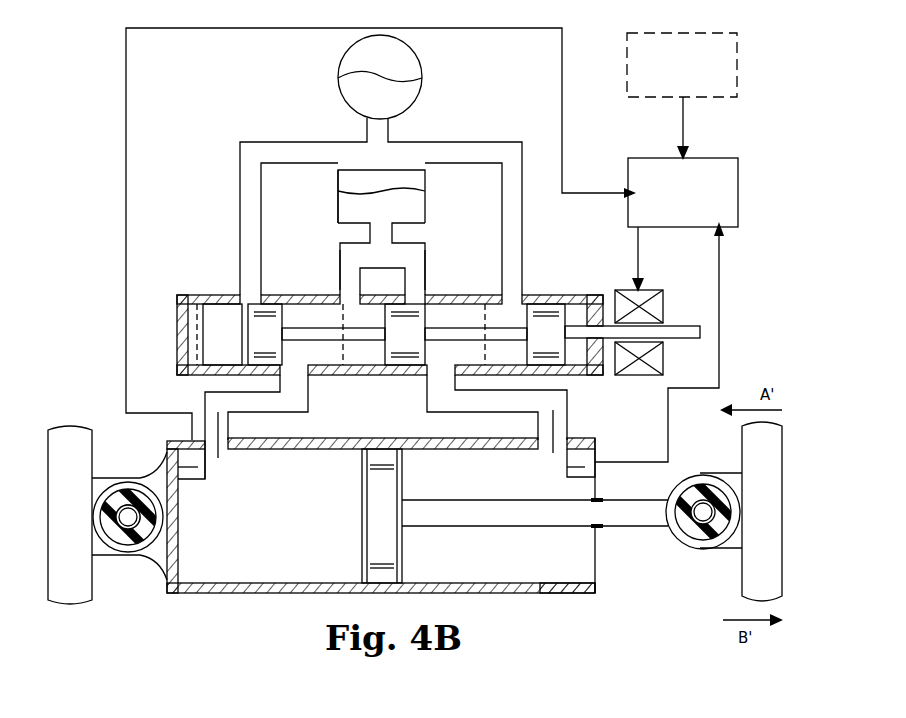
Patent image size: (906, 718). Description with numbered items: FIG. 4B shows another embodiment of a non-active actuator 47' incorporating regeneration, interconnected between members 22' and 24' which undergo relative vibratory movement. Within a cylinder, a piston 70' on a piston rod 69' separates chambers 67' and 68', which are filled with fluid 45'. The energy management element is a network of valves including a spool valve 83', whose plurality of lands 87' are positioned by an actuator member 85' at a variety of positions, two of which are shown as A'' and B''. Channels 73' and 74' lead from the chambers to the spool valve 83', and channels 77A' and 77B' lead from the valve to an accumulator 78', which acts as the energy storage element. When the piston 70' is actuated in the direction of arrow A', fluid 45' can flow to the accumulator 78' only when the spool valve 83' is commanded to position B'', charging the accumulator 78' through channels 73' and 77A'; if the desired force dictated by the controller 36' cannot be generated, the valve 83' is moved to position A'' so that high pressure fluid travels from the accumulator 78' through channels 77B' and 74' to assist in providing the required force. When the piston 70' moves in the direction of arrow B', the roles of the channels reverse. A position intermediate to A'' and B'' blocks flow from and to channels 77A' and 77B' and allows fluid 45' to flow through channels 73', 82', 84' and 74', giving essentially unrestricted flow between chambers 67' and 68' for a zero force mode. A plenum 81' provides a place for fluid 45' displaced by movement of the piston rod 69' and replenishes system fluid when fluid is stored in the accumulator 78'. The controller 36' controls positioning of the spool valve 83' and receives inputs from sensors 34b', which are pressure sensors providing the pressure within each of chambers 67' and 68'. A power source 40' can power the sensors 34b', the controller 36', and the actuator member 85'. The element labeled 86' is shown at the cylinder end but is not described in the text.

The non-active actuator 47' is at (376, 229).
The accumulator 78' is at (380, 77).
The channel 77A' is at (303, 206).
The channel 77B' is at (455, 206).
The power source 40' is at (682, 65).
The controller 36' is at (683, 162).
The plenum 81' is at (381, 232).
The channel 82' is at (316, 270).
The channel 84' is at (443, 270).
The actuator member 85' is at (632, 301).
The lands 87' is at (546, 334).
The spool valve 83' is at (366, 364).
The channel 73' is at (256, 427).
The channel 74' is at (497, 414).
The sensors 34b' is at (381, 482).
The chamber 68' is at (270, 516).
The piston 70' is at (382, 516).
The chamber 67' is at (498, 516).
The piston rod 69' is at (535, 513).
The member 22' is at (108, 515).
The member 24' is at (722, 511).
The fluid 45' is at (381, 541).
The cylinder end wall 86' is at (584, 602).